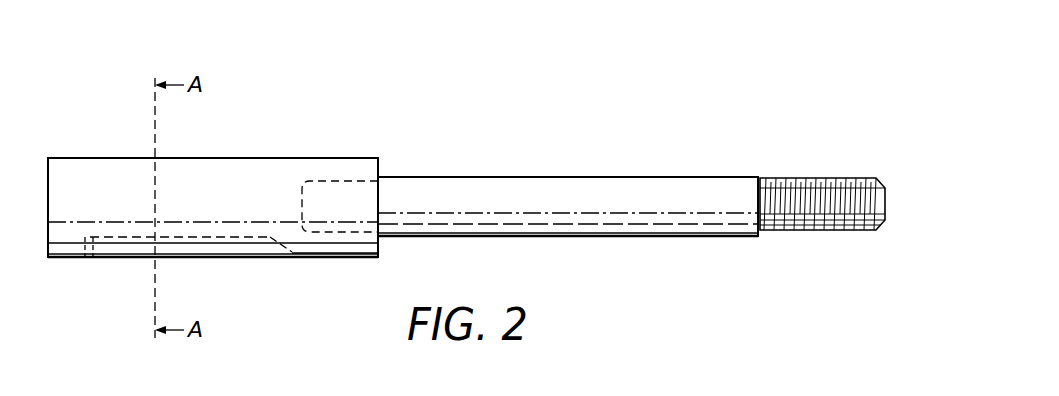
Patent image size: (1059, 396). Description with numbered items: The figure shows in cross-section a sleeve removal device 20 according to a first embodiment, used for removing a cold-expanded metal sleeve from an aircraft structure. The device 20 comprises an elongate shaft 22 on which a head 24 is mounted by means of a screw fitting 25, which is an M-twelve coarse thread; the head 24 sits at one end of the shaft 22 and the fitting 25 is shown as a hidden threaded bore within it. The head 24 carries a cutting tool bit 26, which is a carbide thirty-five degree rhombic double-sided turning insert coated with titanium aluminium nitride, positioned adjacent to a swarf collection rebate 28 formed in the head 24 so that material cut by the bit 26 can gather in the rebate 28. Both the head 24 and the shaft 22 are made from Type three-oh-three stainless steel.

The sleeve removal device 20 is at (535, 138).
The shaft 22 is at (672, 177).
The head 24 is at (72, 158).
The screw fitting 25 is at (334, 181).
The cutting tool bit 26 is at (88, 260).
The swarf collection rebate 28 is at (227, 258).